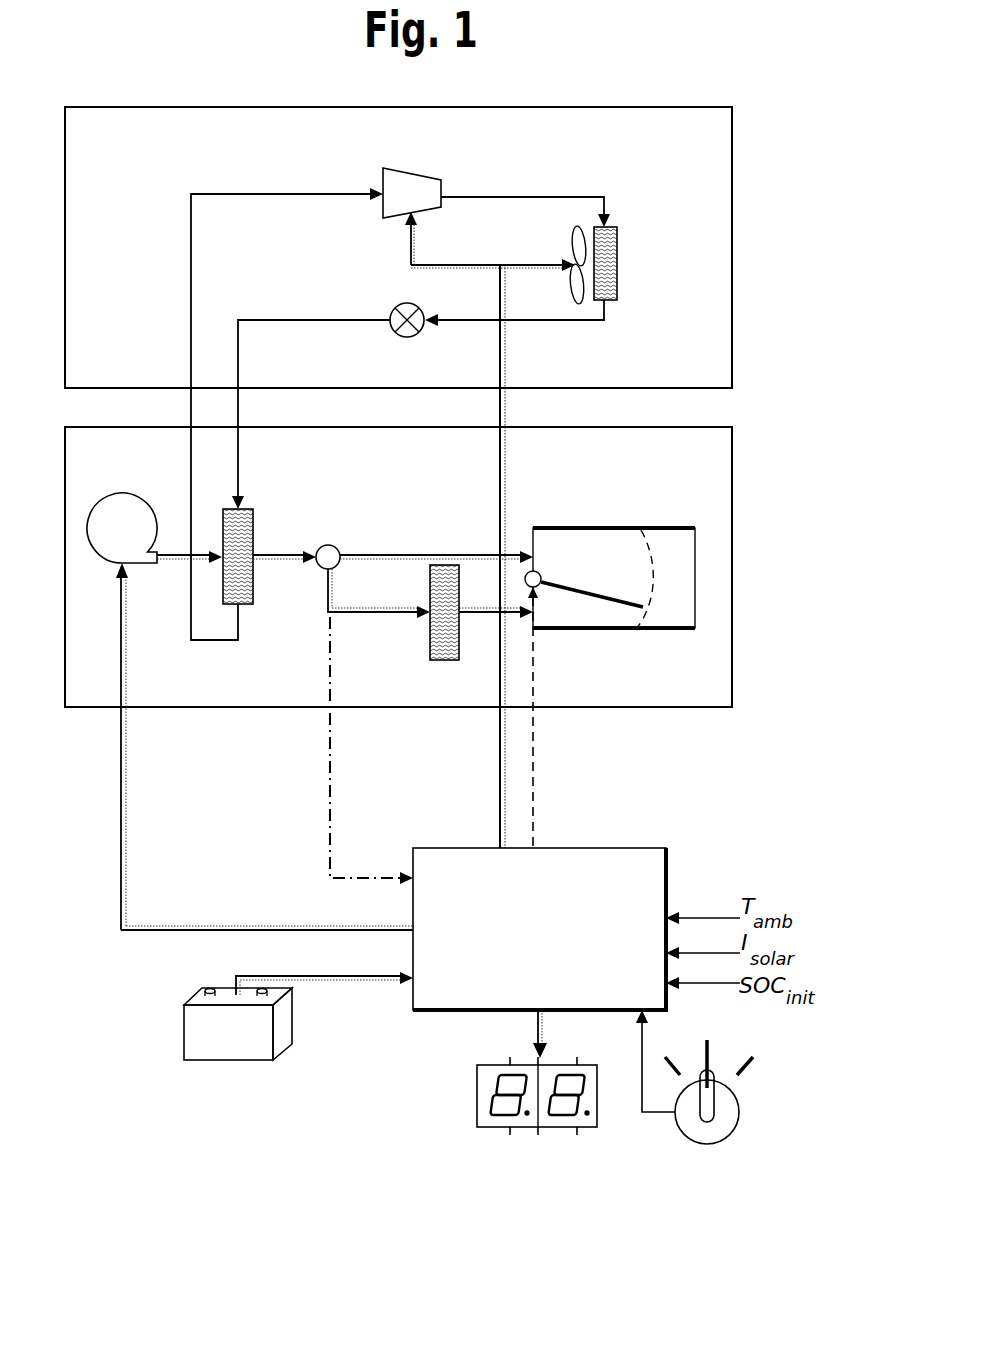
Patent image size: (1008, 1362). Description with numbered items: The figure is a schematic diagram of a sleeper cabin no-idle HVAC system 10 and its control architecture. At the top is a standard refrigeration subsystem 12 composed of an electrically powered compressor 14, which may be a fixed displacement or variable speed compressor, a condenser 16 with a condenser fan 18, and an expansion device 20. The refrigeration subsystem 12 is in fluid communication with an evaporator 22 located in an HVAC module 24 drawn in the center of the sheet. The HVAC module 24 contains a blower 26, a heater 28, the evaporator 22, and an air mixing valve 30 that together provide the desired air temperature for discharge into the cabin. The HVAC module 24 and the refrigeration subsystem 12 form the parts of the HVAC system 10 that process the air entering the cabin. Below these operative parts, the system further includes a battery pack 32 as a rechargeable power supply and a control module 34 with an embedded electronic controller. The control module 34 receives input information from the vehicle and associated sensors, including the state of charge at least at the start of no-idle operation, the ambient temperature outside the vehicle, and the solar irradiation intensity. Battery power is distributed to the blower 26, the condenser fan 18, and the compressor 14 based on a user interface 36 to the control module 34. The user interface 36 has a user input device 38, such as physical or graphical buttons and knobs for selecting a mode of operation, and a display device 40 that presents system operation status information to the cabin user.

The HVAC system 10 is at (795, 442).
The refrigeration subsystem 12 is at (732, 277).
The compressor 14 is at (382, 176).
The condenser 16 is at (617, 275).
The condenser fan 18 is at (570, 240).
The expansion device 20 is at (400, 336).
The evaporator 22 is at (255, 525).
The HVAC module 24 is at (732, 570).
The blower 26 is at (134, 494).
The heater 28 is at (430, 642).
The air mixing valve 30 is at (610, 527).
The battery pack 32 is at (234, 1062).
The control module 34 is at (556, 935).
The user interface 36 is at (501, 1112).
The user input device 38 is at (735, 1122).
The display device 40 is at (477, 1091).